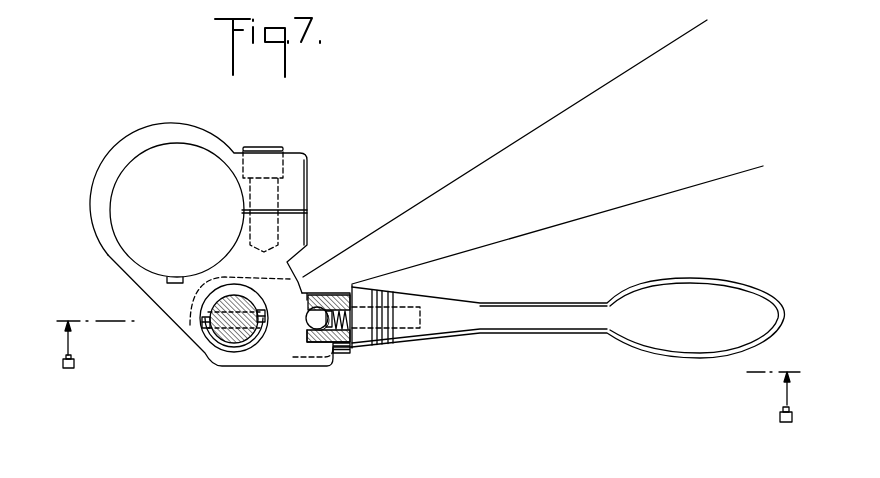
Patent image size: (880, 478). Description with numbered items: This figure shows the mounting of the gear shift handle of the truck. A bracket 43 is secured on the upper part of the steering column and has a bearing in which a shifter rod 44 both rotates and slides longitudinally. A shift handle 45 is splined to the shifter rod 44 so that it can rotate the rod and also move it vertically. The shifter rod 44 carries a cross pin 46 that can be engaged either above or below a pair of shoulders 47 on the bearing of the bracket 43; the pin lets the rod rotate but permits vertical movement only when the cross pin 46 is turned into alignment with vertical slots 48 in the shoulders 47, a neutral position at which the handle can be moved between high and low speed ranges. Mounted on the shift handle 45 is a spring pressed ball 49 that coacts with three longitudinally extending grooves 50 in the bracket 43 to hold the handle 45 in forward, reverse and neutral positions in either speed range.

The bracket 43 is at (163, 315).
The shifter rod 44 is at (223, 345).
The shift handle 45 is at (547, 320).
The cross pin 46 is at (203, 327).
The shoulders 47 is at (243, 352).
The vertical slots 48 is at (205, 330).
The spring pressed ball 49 is at (328, 297).
The grooves 50 is at (296, 280).